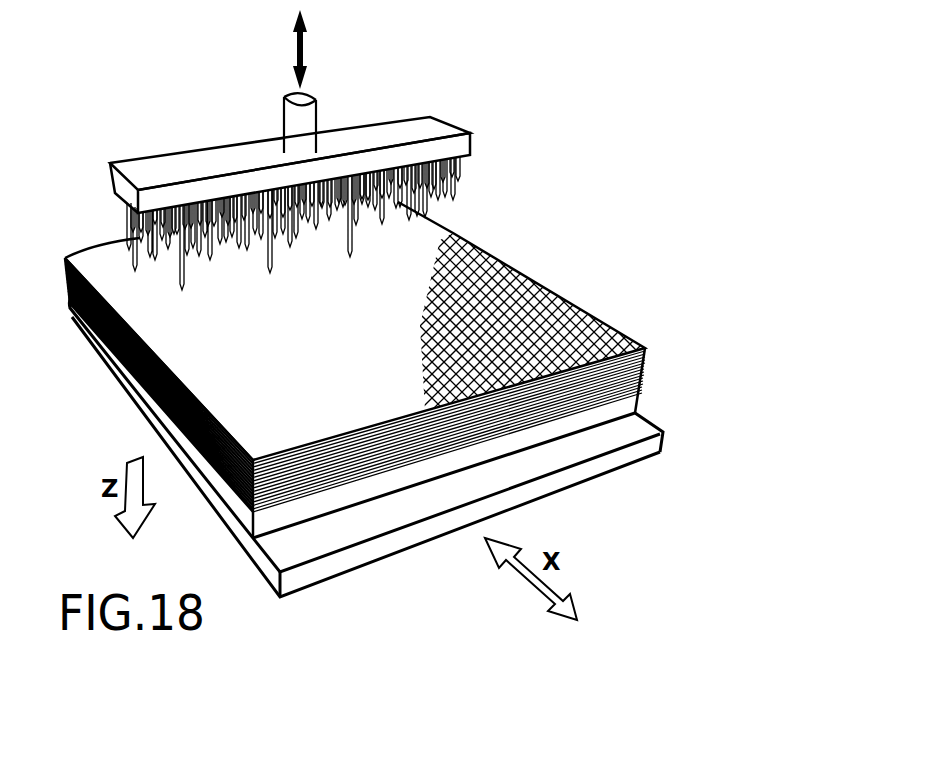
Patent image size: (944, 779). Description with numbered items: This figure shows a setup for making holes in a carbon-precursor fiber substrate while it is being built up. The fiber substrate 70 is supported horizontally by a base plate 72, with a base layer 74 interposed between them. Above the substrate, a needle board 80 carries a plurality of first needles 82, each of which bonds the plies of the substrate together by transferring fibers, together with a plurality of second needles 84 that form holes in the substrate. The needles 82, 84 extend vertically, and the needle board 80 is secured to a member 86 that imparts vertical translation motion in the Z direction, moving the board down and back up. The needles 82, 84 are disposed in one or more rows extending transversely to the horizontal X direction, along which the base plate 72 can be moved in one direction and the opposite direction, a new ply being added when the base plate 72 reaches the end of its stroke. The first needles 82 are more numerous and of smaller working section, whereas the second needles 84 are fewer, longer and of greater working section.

The fiber substrate 70 is at (506, 278).
The base plate 72 is at (352, 562).
The base layer 74 is at (637, 397).
The needle board 80 is at (163, 164).
The first needles 82 is at (332, 228).
The second needles 84 is at (270, 257).
The member 86 is at (293, 122).